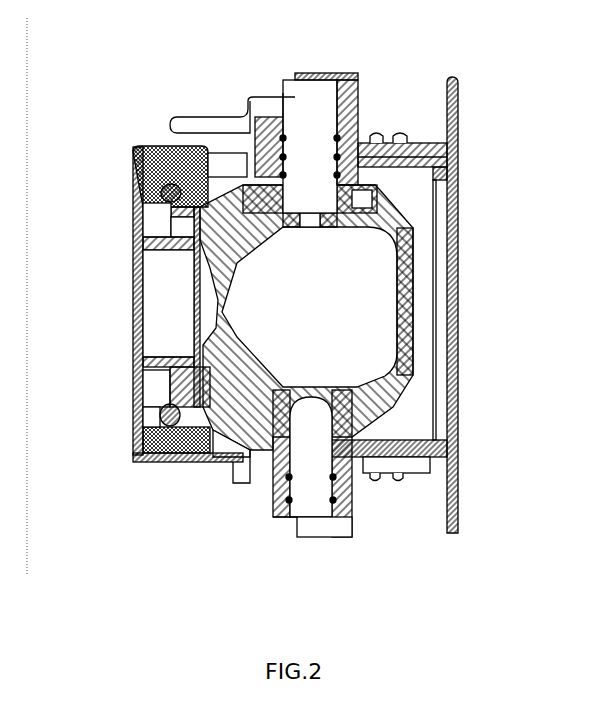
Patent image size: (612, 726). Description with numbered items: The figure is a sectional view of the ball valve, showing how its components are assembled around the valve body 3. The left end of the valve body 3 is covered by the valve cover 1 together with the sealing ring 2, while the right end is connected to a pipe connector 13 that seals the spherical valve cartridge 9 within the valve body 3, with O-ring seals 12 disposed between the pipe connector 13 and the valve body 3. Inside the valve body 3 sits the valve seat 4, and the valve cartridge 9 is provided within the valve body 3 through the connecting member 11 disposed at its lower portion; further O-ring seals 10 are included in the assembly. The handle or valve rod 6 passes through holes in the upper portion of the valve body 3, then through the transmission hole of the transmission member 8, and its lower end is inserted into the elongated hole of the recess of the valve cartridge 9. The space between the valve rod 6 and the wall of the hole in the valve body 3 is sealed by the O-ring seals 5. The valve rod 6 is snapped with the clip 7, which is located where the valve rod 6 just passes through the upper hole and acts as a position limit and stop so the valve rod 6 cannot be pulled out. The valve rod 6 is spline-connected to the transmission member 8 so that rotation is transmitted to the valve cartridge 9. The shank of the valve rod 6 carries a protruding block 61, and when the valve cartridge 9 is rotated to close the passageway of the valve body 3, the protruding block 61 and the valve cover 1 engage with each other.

The valve cover 1 is at (133, 260).
The sealing ring 2 is at (165, 412).
The valve body 3 is at (200, 190).
The valve seat 4 is at (148, 160).
The O-ring seals 5 is at (360, 133).
The valve rod 6 is at (321, 123).
The protruding block 61 is at (248, 100).
The clip 7 is at (403, 140).
The transmission member 8 is at (402, 205).
The spherical valve cartridge 9 is at (375, 402).
The O-ring seals 10 is at (280, 480).
The connecting member 11 is at (325, 495).
The O-ring seals 12 is at (447, 160).
The pipe connector 13 is at (447, 137).